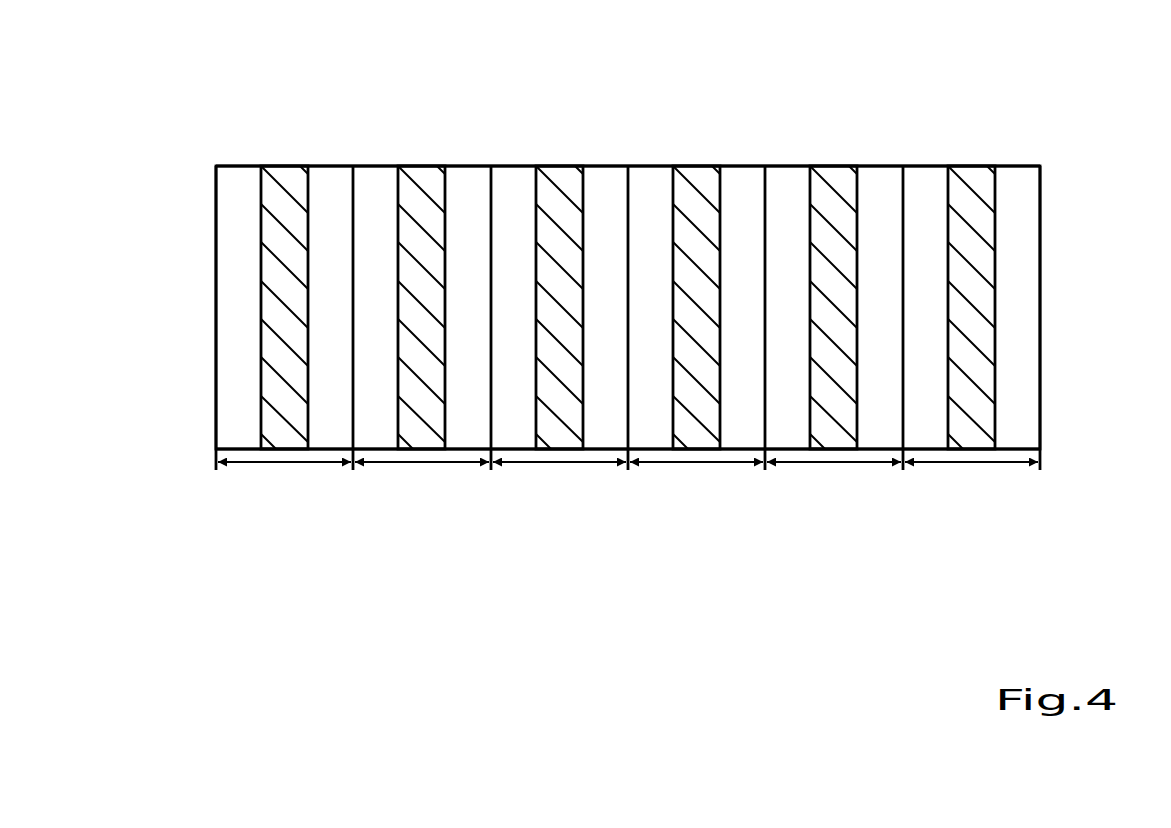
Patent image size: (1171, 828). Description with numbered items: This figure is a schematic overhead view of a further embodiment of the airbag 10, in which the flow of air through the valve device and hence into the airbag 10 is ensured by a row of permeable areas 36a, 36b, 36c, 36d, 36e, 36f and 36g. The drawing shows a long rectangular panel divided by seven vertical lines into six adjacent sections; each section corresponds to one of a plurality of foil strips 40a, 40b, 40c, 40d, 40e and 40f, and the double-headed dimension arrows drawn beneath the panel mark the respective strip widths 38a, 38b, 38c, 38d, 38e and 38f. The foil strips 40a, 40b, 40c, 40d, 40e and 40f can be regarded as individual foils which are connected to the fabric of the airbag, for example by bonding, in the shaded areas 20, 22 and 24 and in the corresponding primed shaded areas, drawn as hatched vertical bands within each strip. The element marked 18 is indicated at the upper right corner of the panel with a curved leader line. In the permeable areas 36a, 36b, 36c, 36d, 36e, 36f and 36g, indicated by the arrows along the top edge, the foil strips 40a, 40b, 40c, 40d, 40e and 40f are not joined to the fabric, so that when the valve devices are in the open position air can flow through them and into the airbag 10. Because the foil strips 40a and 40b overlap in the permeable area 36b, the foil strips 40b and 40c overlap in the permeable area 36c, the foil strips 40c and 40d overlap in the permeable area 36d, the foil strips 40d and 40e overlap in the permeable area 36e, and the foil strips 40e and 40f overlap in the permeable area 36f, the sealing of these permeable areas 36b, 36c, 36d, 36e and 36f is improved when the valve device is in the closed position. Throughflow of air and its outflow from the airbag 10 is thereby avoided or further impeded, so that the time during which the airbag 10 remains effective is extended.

The airbag 10 is at (917, 685).
The housing 18 is at (1042, 195).
The shaded area 20 is at (287, 413).
The shaded area 22 is at (425, 413).
The shaded area 24 is at (563, 413).
The permeable area 36a is at (238, 150).
The permeable area 36b is at (377, 150).
The permeable area 36c is at (488, 150).
The permeable area 36d is at (636, 150).
The permeable area 36e is at (757, 150).
The permeable area 36f is at (902, 150).
The permeable area 36g is at (1035, 150).
The strip width 38a is at (307, 465).
The strip width 38b is at (448, 465).
The strip width 38c is at (592, 465).
The strip width 38d is at (726, 465).
The strip width 38e is at (862, 465).
The strip width 38f is at (999, 465).
The foil strip 40a is at (229, 525).
The foil strip 40b is at (406, 553).
The foil strip 40c is at (558, 553).
The foil strip 40d is at (690, 553).
The foil strip 40e is at (825, 553).
The foil strip 40f is at (960, 553).